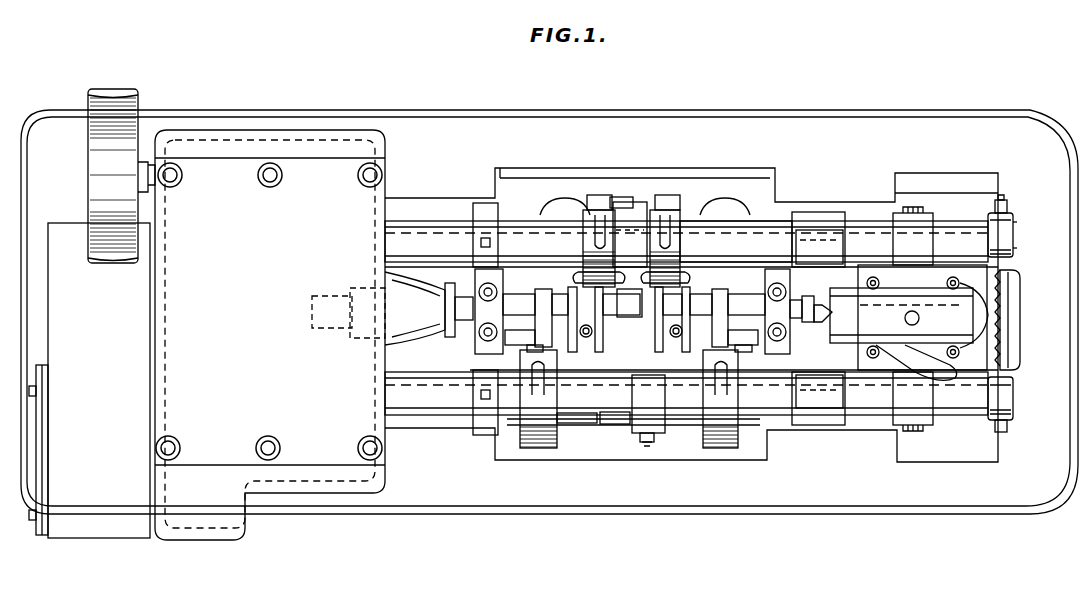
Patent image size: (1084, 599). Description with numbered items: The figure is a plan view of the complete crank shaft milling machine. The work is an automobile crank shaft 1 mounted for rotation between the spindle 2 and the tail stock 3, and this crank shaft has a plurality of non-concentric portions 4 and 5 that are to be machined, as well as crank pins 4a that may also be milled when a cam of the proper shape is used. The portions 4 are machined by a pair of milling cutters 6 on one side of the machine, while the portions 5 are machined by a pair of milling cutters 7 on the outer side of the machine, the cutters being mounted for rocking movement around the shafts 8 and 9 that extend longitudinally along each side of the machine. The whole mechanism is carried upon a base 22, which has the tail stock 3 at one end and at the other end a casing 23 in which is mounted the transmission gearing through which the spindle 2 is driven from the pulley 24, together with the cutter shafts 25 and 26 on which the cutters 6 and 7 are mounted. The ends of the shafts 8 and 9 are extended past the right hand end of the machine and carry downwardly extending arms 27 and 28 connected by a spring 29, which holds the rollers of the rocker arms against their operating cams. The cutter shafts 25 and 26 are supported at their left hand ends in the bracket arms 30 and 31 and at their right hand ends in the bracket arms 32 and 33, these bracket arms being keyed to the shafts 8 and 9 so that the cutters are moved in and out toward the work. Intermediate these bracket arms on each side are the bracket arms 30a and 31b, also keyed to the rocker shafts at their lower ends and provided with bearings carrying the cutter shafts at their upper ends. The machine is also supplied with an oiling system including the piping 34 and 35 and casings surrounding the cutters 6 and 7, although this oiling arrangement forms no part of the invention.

The crank shaft 1 is at (560, 300).
The spindle 2 is at (430, 325).
The tail stock 3 is at (845, 305).
The non-concentric portions 4 is at (580, 293).
The crank pins 4a is at (750, 350).
The non-concentric portions 5 is at (483, 283).
The milling cutters 6 is at (600, 282).
The milling cutters 7 is at (560, 400).
The rocker shaft 8 is at (952, 232).
The rocker shaft 9 is at (622, 424).
The base 22 is at (217, 117).
The casing 23 is at (314, 170).
The pulley 24 is at (97, 155).
The cutter shaft 25 is at (735, 240).
The cutter shaft 26 is at (660, 415).
The downwardly extending arm 27 is at (1012, 423).
The downwardly extending arm 28 is at (1004, 228).
The spring 29 is at (1021, 358).
The bracket arm 30 is at (408, 240).
The bracket arm 30a is at (627, 232).
The bracket arm 31 is at (425, 405).
The bracket arm 31b is at (655, 440).
The bracket arm 32 is at (814, 225).
The bracket arm 33 is at (825, 420).
The piping 34 is at (590, 423).
The piping 35 is at (598, 203).